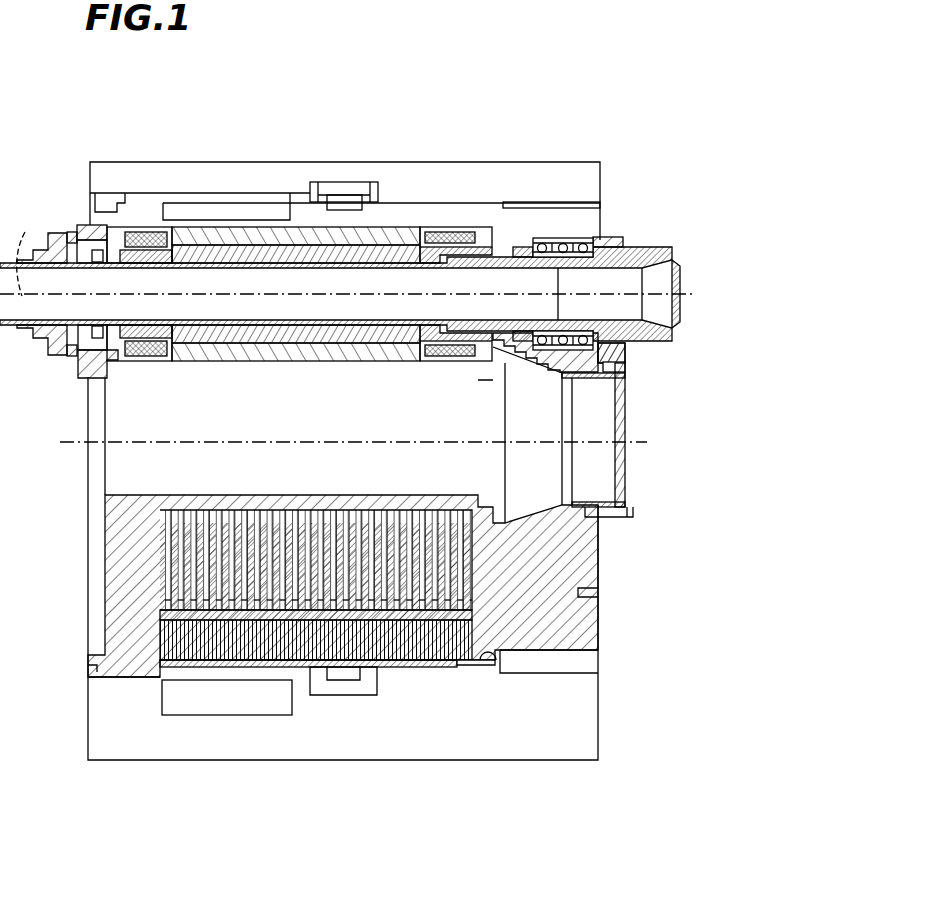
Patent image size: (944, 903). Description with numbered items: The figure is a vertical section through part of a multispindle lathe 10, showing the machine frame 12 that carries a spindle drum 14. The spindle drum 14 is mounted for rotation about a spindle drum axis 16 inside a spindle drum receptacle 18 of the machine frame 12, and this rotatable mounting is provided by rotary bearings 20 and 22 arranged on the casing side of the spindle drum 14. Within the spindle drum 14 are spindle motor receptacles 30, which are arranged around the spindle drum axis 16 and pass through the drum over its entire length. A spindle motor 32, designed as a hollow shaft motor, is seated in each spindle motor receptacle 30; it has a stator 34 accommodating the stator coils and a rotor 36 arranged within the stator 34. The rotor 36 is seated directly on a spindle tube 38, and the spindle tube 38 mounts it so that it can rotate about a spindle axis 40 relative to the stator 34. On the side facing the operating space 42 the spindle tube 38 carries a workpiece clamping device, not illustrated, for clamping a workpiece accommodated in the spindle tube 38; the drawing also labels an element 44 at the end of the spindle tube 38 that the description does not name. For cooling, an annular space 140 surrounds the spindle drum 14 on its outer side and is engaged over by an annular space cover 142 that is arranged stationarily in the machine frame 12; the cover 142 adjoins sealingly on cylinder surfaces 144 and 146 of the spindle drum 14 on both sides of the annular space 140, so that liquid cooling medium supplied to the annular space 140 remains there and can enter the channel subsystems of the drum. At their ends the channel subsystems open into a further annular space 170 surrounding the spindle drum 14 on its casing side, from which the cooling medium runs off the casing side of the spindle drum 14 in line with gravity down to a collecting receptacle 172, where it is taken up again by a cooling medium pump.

The multispindle lathe 10 is at (485, 149).
The machine frame 12 is at (601, 176).
The spindle drum 14 is at (599, 557).
The spindle drum axis 16 is at (598, 430).
The spindle drum receptacle 18 is at (546, 198).
The rotary bearing 20 is at (495, 655).
The rotary bearing 22 is at (138, 680).
The spindle motor receptacle 30 is at (592, 272).
The spindle motor 32 is at (216, 227).
The stator 34 is at (257, 235).
The rotor 36 is at (408, 257).
The spindle tube 38 is at (643, 249).
The spindle axis 40 is at (347, 322).
The operating space 42 is at (718, 337).
The bore 44 is at (671, 283).
The annular space 140 is at (350, 202).
The annular space cover 142 is at (333, 192).
The cylinder surface 144 is at (312, 184).
The cylinder surface 146 is at (372, 200).
The annular space 170 is at (178, 205).
The collecting receptacle 172 is at (190, 700).